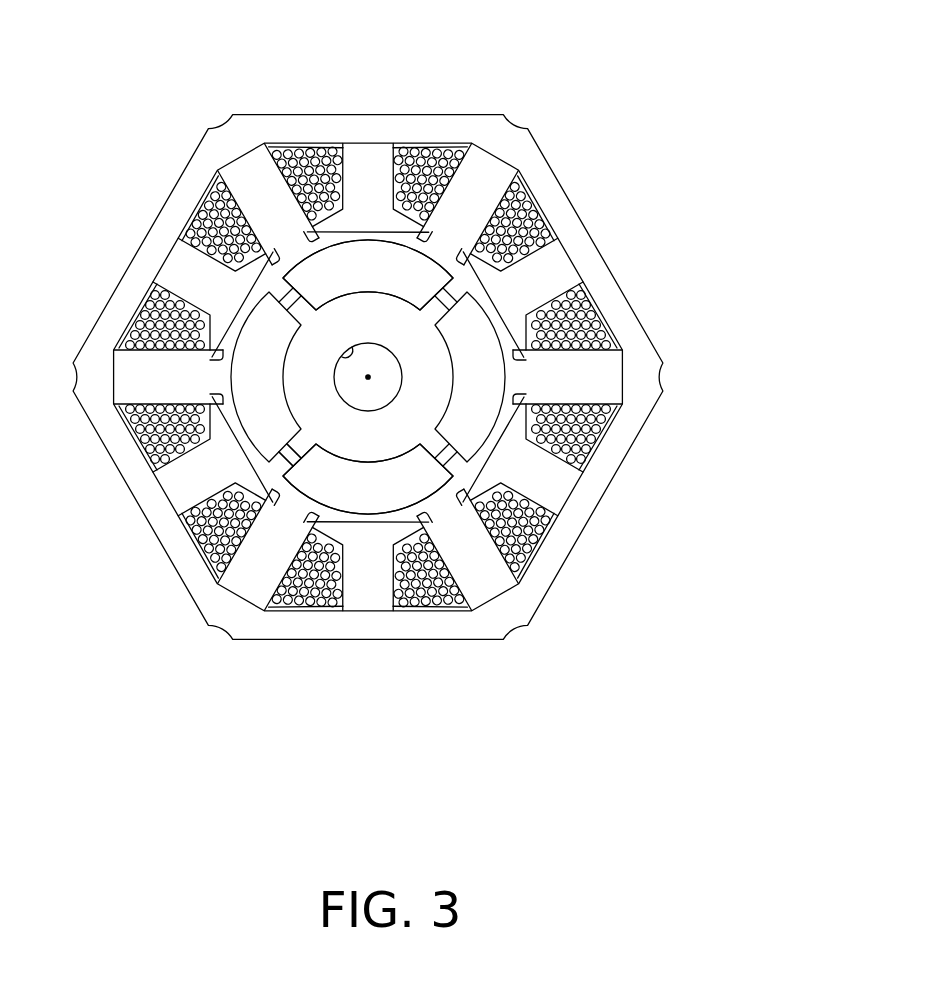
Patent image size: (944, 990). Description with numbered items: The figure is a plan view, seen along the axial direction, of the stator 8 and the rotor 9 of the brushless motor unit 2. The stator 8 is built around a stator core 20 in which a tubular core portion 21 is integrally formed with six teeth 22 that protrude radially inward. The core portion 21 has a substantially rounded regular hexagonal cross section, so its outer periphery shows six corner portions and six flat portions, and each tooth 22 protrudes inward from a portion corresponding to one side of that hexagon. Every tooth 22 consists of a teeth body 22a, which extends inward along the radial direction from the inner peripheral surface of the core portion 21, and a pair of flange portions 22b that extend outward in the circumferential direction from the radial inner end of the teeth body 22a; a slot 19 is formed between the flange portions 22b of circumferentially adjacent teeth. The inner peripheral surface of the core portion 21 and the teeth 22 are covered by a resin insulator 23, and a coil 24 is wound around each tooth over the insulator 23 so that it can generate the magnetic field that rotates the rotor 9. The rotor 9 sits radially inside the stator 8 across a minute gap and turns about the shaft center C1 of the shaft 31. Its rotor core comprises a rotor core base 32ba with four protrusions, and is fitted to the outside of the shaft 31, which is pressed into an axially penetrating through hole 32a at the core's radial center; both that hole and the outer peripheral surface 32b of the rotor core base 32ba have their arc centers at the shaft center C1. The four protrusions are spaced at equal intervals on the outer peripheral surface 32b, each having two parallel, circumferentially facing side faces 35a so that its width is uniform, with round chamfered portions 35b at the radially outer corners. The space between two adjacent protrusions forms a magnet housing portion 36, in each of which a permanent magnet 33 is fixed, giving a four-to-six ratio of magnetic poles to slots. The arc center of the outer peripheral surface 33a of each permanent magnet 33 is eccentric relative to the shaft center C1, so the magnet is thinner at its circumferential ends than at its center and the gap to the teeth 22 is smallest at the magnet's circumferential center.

The motor unit 2 is at (621, 75).
The stator 8 is at (136, 252).
The rotor 9 is at (488, 340).
The slot 19 is at (473, 197).
The stator core 20 is at (487, 112).
The core portion 21 is at (513, 132).
The teeth 22 is at (538, 203).
The teeth body 22a is at (320, 612).
The flange portion 22b is at (293, 613).
The insulator 23 is at (397, 168).
The coil 24 is at (523, 248).
The shaft 31 is at (400, 384).
The through hole 32a is at (345, 352).
The outer peripheral surface 32b is at (369, 292).
The rotor core base 32ba is at (368, 433).
The permanent magnet 33 is at (597, 310).
The outer peripheral surface 33a is at (498, 312).
The side face 35a is at (453, 445).
The round chamfered portion 35b is at (446, 458).
The magnet housing portion 36 is at (275, 437).
The shaft center C1 is at (372, 377).